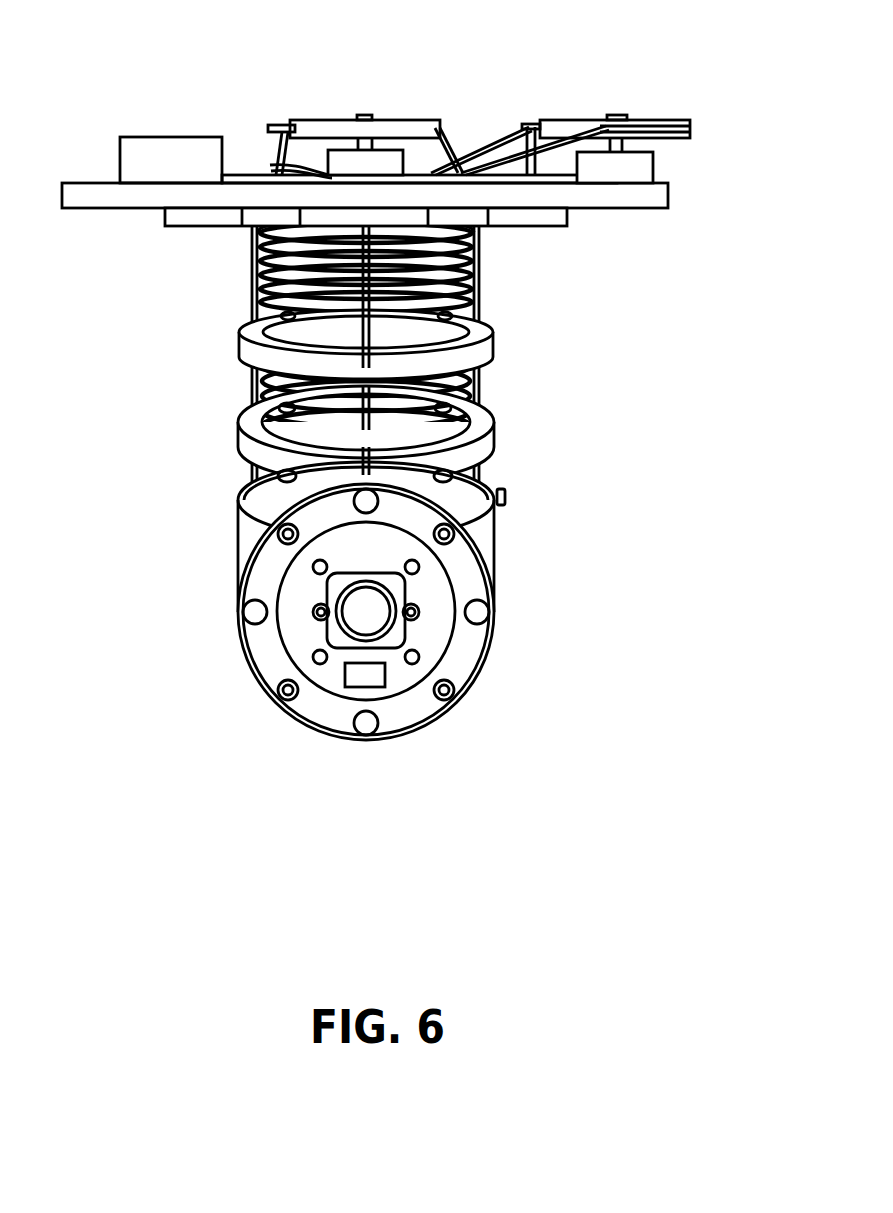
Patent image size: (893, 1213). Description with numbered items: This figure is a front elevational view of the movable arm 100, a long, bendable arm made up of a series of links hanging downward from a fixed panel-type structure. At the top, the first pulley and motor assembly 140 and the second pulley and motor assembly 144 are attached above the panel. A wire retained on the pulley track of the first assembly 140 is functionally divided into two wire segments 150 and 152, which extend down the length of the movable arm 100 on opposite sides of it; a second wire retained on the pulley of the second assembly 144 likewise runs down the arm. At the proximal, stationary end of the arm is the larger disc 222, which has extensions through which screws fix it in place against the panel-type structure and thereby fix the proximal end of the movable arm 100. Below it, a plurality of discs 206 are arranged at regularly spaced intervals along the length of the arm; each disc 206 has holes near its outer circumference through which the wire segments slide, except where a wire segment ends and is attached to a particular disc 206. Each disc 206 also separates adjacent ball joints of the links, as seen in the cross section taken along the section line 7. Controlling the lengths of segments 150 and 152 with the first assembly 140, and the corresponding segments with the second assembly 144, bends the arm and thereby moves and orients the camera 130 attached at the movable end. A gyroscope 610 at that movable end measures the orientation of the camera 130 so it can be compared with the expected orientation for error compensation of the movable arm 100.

The movable arm 100 is at (376, 286).
The camera 130 is at (395, 587).
The first pulley and motor assembly 140 is at (392, 168).
The second pulley and motor assembly 144 is at (638, 168).
The wire segment 150 is at (252, 280).
The wire segment 152 is at (481, 278).
The discs 206 is at (243, 333).
The disc 222 is at (178, 226).
The gyroscope 610 is at (375, 677).
The section line 7- 7 is at (366, 115).